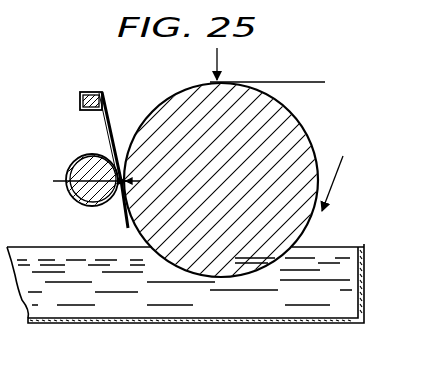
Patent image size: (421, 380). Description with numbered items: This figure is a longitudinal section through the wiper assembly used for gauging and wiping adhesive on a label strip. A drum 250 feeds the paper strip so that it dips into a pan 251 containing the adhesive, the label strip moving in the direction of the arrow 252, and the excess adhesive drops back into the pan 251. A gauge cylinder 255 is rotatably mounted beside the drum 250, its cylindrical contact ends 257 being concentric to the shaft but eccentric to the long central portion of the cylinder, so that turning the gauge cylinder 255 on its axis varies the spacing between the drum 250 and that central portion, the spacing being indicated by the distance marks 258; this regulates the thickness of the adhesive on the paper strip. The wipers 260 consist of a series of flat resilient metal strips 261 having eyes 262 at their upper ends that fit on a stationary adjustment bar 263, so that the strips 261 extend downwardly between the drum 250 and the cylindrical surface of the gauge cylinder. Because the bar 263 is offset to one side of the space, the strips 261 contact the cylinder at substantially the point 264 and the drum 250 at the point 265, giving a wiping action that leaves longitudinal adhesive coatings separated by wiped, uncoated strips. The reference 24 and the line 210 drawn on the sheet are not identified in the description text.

The direction arrow 24 is at (232, 64).
The reference line 210 is at (279, 82).
The roller 250 is at (280, 132).
The web substrate 251 is at (123, 303).
The rotation direction arrow 252 is at (334, 189).
The applicator assembly 255 is at (66, 154).
The applicator roll 257 is at (96, 153).
The roll surface 258 is at (98, 208).
The blade holder 260 is at (95, 123).
The blade 261 is at (107, 134).
The mounting member 262 is at (88, 92).
The holder block 263 is at (80, 97).
The roll axis 264 is at (79, 185).
The blade tip 265 is at (123, 222).